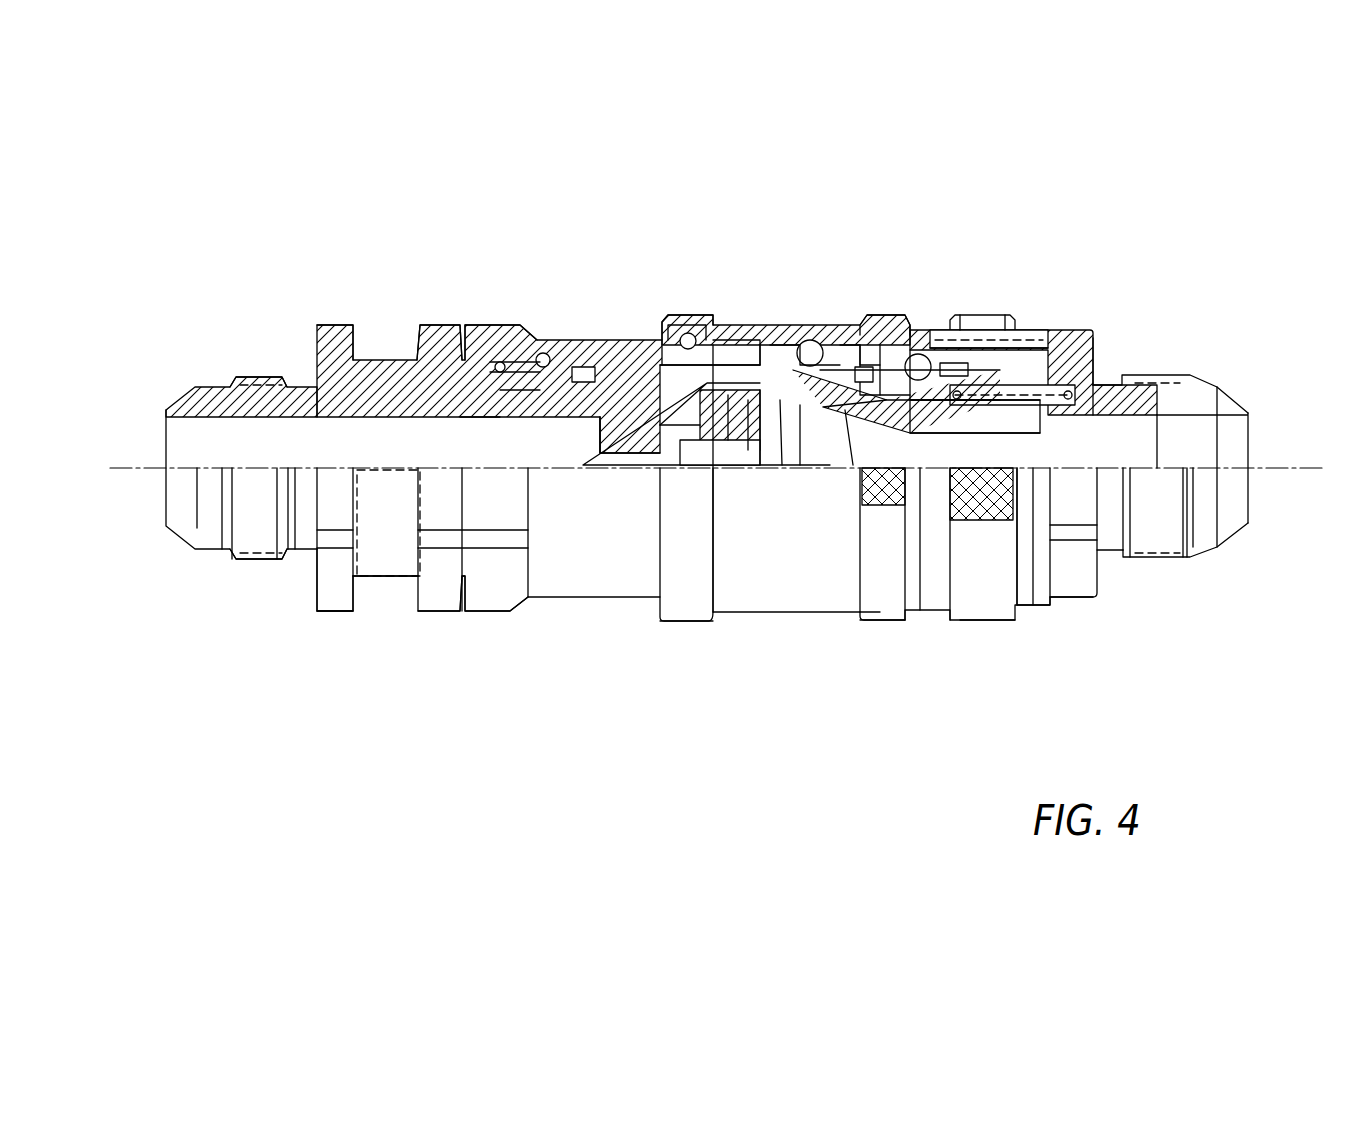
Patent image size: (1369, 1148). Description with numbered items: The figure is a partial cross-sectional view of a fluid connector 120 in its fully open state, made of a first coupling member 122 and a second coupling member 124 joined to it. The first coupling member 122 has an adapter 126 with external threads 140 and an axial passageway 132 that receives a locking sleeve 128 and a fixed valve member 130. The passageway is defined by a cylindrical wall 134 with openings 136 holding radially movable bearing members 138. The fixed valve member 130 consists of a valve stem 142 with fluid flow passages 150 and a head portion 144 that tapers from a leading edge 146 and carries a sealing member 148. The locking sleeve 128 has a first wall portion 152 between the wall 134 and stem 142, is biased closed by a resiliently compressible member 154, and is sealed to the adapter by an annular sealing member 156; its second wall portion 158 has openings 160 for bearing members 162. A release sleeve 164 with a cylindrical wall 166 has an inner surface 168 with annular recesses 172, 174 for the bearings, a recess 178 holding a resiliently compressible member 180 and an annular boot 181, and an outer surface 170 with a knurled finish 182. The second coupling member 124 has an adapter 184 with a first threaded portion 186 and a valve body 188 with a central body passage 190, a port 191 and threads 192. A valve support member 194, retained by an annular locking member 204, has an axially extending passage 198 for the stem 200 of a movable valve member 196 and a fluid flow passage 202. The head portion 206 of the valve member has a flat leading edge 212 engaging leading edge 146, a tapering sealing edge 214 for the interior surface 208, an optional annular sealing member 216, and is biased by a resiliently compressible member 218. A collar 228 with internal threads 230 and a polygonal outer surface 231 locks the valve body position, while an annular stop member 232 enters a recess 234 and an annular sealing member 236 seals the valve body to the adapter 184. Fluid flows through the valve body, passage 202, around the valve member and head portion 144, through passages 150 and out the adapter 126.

The fluid connector 120 is at (1112, 230).
The first coupling member 122 is at (1089, 318).
The second coupling member 124 is at (327, 622).
The adapter 126 is at (1089, 340).
The locking sleeve 128 is at (931, 410).
The fixed valve member 130 is at (846, 343).
The axial passageway 132 is at (1222, 425).
The cylindrical wall 134 is at (995, 318).
The openings 136 is at (920, 347).
The bearing member 138 is at (912, 347).
The external threads 140 is at (1166, 374).
The valve stem 142 is at (1065, 418).
The head portion 144 is at (853, 470).
The leading edge 146 is at (770, 470).
The sealing member 148 is at (799, 470).
The fluid flow passage 150 is at (918, 470).
The first wall portion 152 is at (1026, 330).
The resiliently compressible member 154 is at (1050, 420).
The annular sealing member 156 is at (1003, 470).
The second wall portion 158 is at (860, 326).
The openings 160 is at (828, 342).
The bearing member 162 is at (855, 362).
The release sleeve 164 is at (661, 339).
The cylindrical wall 166 is at (738, 325).
The inner surface 168 is at (694, 306).
The outer surface 170 is at (1015, 347).
The annular recess 172 is at (873, 345).
The annular recess 174 is at (717, 330).
The recess 178 is at (970, 330).
The resiliently compressible member 180 is at (1003, 330).
The annular boot 181 is at (1034, 335).
The knurled finish 182 is at (878, 612).
The adapter 184 is at (494, 326).
The first threaded portion 186 is at (519, 362).
The valve body 188 is at (343, 325).
The central body passage 190 is at (176, 421).
The port 191 is at (581, 366).
The threads 192 is at (266, 378).
The valve support member 194 is at (612, 338).
The valve member 196 is at (680, 476).
The axially extending passage 198 is at (590, 453).
The stem 200 is at (661, 470).
The fluid flow passage 202 is at (690, 312).
The annular locking member 204 is at (656, 458).
The head portion 206 is at (728, 470).
The interior surface 208 is at (830, 470).
The leading edge 212 is at (782, 470).
The sealing edge 214 is at (771, 340).
The annular sealing member 216 is at (748, 470).
The resiliently compressible member 218 is at (690, 440).
The collar 228 is at (438, 622).
The internal threads 230 is at (439, 326).
The polygonal outer surface 231 is at (437, 594).
The annular stop member 232 is at (529, 400).
The recess 234 is at (480, 418).
The annular sealing member 236 is at (545, 357).